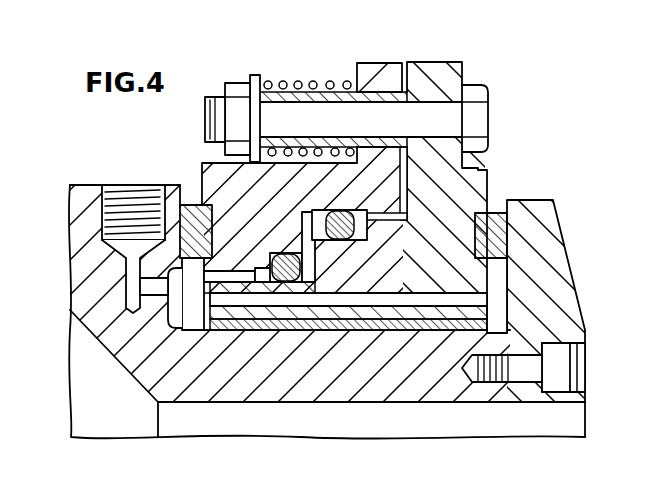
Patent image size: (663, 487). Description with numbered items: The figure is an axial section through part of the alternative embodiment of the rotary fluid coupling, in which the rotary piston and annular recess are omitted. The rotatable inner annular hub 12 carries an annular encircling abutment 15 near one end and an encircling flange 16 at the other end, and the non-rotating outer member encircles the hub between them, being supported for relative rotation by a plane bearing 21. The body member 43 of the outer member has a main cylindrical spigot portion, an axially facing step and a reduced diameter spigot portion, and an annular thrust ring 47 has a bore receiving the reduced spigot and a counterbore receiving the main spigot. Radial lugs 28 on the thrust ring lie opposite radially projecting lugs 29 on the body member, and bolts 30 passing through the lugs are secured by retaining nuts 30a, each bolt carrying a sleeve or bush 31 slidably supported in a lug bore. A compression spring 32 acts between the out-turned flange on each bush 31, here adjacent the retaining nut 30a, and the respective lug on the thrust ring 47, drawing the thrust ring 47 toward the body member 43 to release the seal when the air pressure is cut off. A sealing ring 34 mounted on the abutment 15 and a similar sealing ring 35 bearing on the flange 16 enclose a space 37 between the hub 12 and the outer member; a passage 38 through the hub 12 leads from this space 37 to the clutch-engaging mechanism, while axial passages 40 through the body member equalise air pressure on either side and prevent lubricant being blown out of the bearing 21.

The inner annular hub 12 is at (125, 350).
The annular encircling abutment 15 is at (74, 188).
The encircling flange 16 is at (547, 218).
The plane bearing 21 is at (392, 330).
The radial lugs 28 is at (365, 72).
The radially projecting lugs 29 is at (447, 72).
The bolts 30 is at (295, 110).
The retaining nuts 30a is at (238, 95).
The bush 31 is at (375, 92).
The compression spring 32 is at (286, 83).
The sealing ring 34 is at (190, 210).
The sealing ring 35 is at (490, 215).
The space 37 is at (188, 312).
The passage 38 is at (113, 185).
The axial passages 40 is at (455, 295).
The body member 43 is at (480, 172).
The annular thrust ring 47 is at (205, 185).